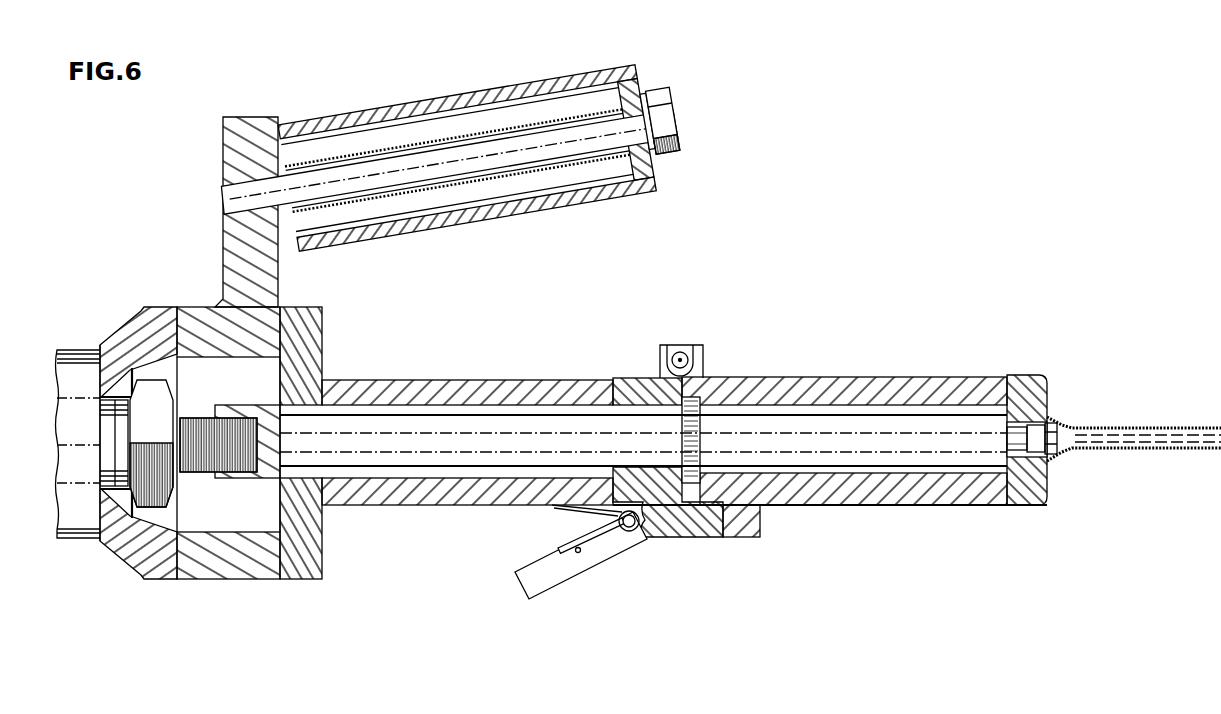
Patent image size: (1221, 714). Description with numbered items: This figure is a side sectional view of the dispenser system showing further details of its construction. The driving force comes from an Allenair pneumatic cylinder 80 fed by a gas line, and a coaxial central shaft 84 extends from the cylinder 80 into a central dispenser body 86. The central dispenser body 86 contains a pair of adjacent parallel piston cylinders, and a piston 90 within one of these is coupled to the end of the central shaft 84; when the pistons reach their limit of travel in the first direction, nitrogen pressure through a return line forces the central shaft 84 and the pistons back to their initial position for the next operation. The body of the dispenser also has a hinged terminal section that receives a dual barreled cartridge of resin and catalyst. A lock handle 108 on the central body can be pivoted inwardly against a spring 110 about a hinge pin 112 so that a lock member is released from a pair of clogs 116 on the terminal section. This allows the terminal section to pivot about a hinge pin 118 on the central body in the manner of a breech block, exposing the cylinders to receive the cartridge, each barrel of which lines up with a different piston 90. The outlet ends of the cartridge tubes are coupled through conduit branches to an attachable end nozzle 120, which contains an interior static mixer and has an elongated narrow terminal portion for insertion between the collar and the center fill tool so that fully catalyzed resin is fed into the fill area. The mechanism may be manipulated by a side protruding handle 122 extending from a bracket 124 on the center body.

The cylinder 80 is at (77, 541).
The central shaft 84 is at (205, 472).
The central dispenser body 86 is at (516, 379).
The piston 90 is at (553, 425).
The lock handle 108 is at (565, 582).
The spring 110 is at (597, 542).
The hinge pin 112 is at (633, 531).
The clogs 116 is at (702, 520).
The hinge pin 118 is at (688, 355).
The end nozzle 120 is at (1105, 428).
The handle 122 is at (500, 86).
The bracket 124 is at (222, 262).